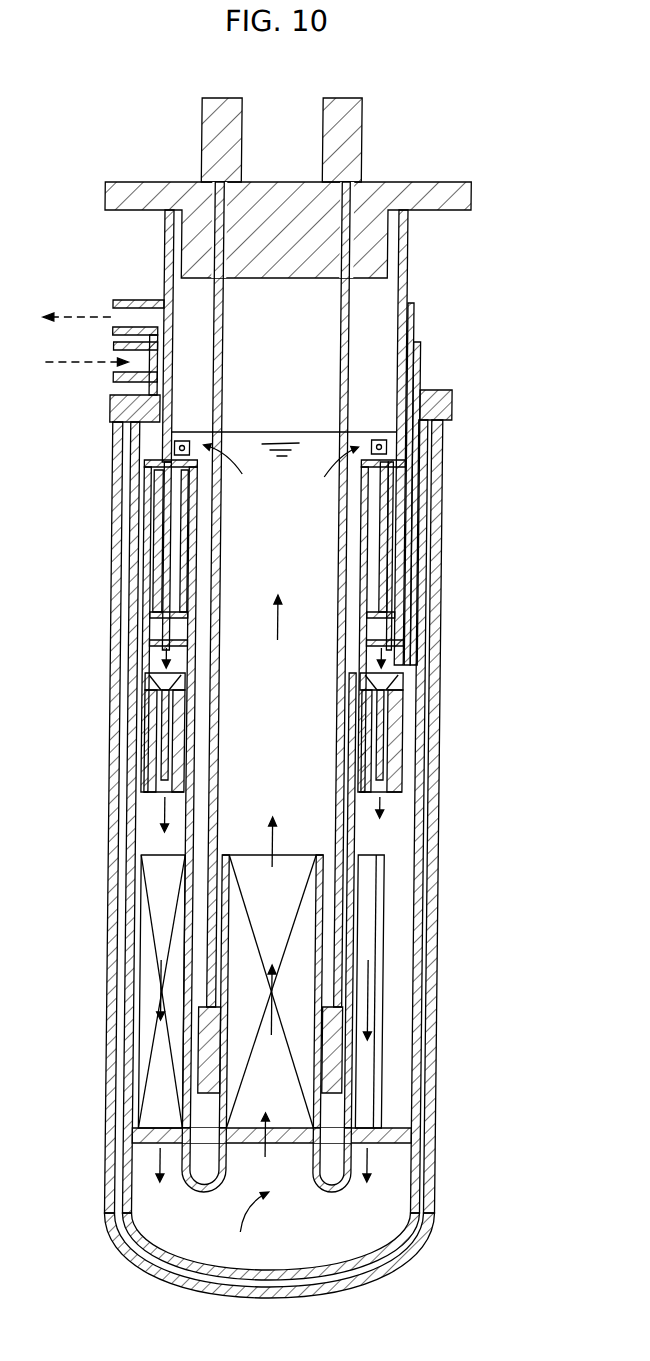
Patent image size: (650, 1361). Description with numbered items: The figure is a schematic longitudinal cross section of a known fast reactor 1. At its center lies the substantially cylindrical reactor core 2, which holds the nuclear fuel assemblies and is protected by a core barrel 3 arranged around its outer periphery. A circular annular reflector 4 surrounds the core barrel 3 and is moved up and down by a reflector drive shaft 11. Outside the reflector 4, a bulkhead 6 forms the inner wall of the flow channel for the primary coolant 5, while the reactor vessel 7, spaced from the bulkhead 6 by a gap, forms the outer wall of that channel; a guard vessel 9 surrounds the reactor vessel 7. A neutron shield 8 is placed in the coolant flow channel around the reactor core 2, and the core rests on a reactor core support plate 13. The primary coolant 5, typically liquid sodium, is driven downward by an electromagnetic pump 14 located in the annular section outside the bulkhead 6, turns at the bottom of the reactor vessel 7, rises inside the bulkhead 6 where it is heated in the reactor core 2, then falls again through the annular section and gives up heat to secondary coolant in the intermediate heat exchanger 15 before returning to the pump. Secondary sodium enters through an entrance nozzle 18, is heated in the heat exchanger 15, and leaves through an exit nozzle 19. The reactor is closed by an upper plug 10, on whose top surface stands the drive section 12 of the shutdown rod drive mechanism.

The fast reactor 1 is at (501, 167).
The reactor core 2 is at (298, 858).
The core barrel 3 is at (231, 854).
The reflector 4 is at (232, 1021).
The primary coolant 5 is at (182, 816).
The bulkhead 6 is at (193, 751).
The reactor vessel 7 is at (131, 886).
The neutron shield 8 is at (150, 1050).
The guard vessel 9 is at (118, 945).
The upper plug 10 is at (374, 257).
The reflector drive shaft 11 is at (224, 514).
The drive section 12 is at (229, 143).
The reactor core support plate 13 is at (296, 1143).
The electromagnetic pump 14 is at (147, 739).
The intermediate heat exchanger 15 is at (183, 576).
The entrance nozzle 18 is at (115, 378).
The exit nozzle 19 is at (135, 300).